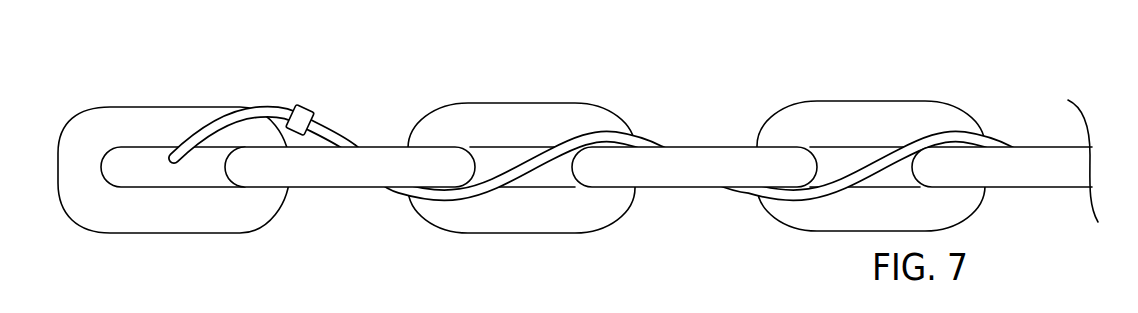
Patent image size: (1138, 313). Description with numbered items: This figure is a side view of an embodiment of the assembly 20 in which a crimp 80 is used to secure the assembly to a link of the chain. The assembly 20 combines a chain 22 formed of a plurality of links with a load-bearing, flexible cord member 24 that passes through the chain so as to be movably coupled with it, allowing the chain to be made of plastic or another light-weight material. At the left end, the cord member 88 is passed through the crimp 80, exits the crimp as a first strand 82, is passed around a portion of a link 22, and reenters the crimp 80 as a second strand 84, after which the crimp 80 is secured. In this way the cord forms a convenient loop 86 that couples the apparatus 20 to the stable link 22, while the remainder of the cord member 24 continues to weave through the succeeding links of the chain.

The assembly 20 is at (517, 93).
The chain 22 is at (100, 106).
The flexible cord member 24 is at (649, 136).
The crimp 80 is at (303, 108).
The first strand 82 is at (192, 146).
The second strand 84 is at (275, 107).
The loop 86 is at (196, 133).
The cord member 88 is at (338, 134).